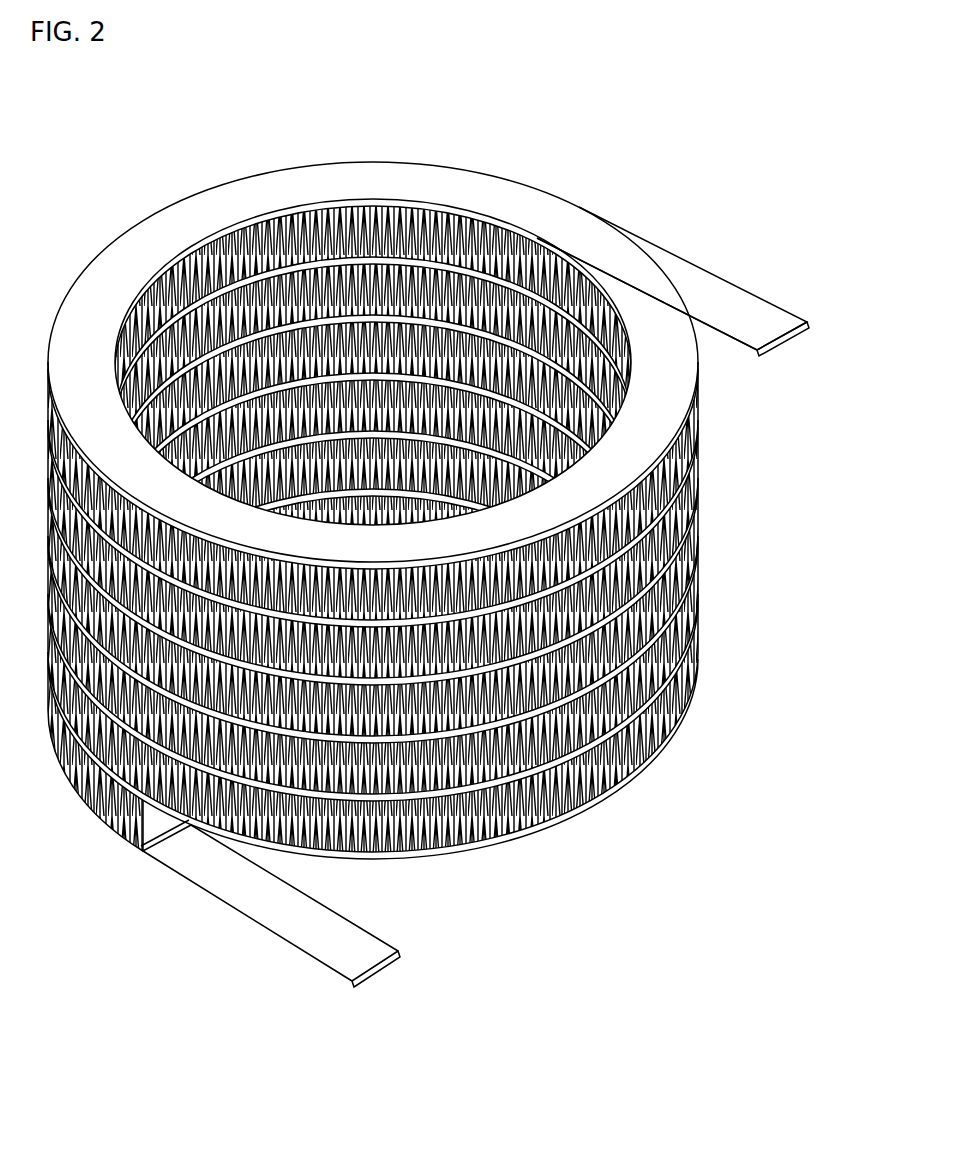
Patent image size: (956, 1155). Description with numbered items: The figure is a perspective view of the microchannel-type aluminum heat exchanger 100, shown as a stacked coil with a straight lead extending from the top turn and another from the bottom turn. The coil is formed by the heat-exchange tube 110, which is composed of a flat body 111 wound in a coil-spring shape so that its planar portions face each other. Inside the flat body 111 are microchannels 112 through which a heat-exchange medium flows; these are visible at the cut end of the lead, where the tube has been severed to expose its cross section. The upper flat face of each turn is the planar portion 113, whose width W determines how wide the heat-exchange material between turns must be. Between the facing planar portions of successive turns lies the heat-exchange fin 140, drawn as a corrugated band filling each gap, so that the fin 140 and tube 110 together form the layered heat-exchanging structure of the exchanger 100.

The microchannel-type aluminum heat exchanger 100 is at (460, 523).
The heat-exchange tube 110 is at (460, 574).
The flat body 111 is at (740, 344).
The microchannels 112 is at (795, 338).
The planar portion 113 is at (745, 290).
The heat-exchange fin 140 is at (492, 212).